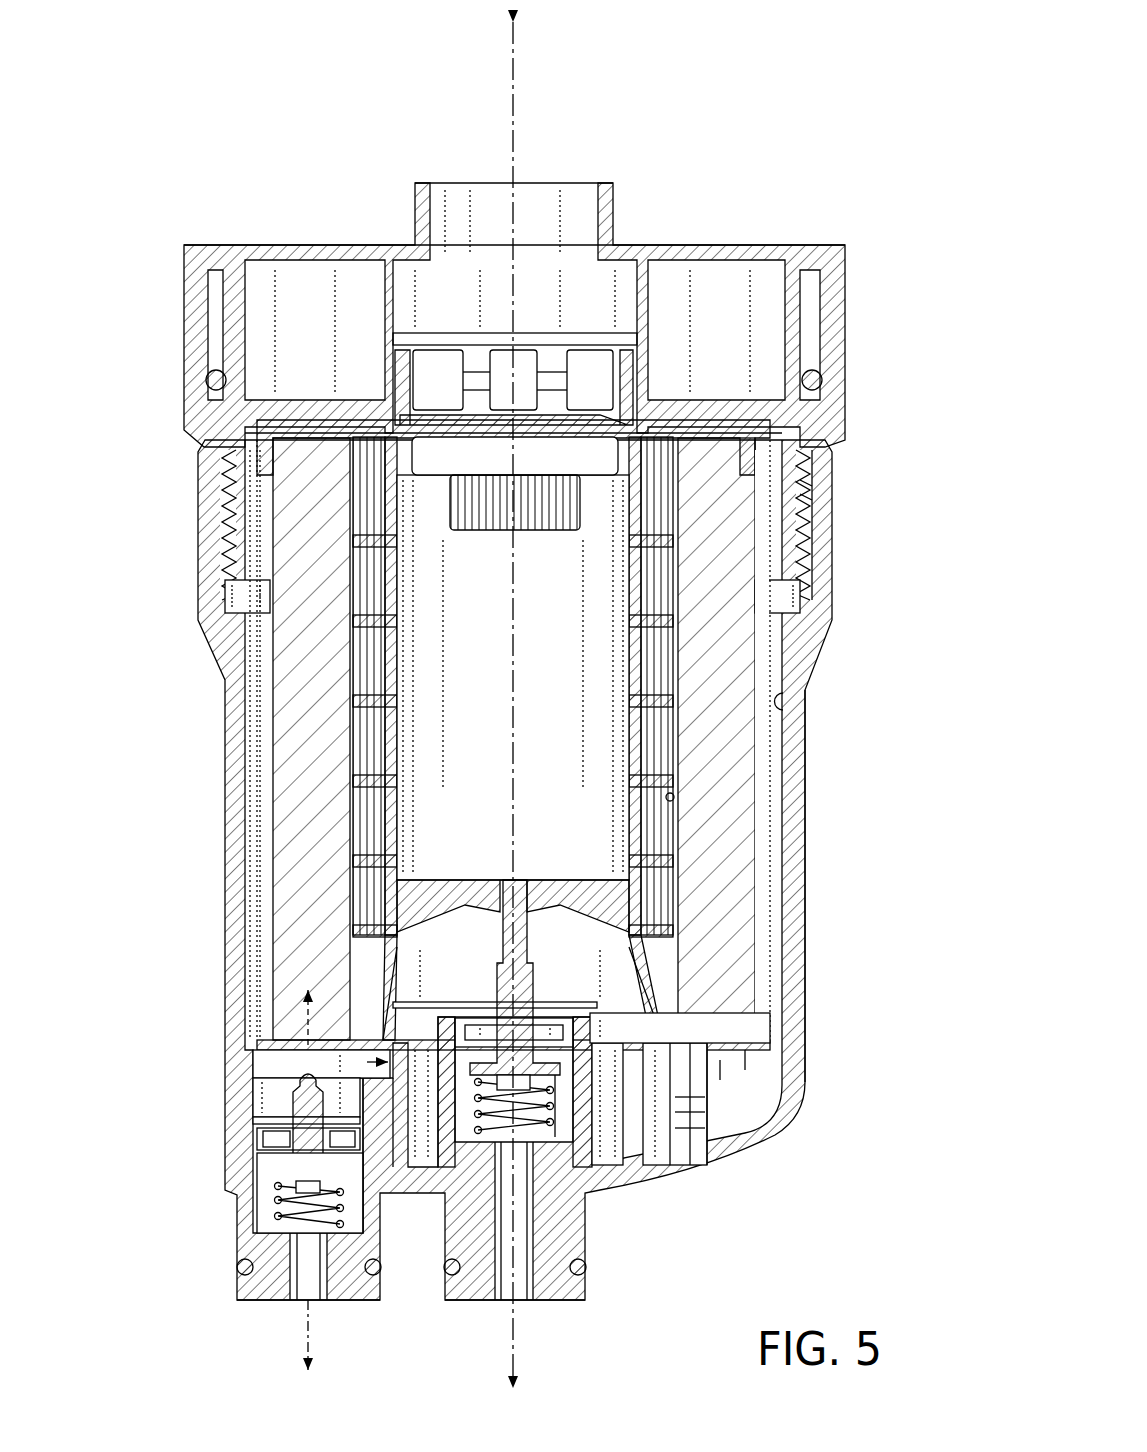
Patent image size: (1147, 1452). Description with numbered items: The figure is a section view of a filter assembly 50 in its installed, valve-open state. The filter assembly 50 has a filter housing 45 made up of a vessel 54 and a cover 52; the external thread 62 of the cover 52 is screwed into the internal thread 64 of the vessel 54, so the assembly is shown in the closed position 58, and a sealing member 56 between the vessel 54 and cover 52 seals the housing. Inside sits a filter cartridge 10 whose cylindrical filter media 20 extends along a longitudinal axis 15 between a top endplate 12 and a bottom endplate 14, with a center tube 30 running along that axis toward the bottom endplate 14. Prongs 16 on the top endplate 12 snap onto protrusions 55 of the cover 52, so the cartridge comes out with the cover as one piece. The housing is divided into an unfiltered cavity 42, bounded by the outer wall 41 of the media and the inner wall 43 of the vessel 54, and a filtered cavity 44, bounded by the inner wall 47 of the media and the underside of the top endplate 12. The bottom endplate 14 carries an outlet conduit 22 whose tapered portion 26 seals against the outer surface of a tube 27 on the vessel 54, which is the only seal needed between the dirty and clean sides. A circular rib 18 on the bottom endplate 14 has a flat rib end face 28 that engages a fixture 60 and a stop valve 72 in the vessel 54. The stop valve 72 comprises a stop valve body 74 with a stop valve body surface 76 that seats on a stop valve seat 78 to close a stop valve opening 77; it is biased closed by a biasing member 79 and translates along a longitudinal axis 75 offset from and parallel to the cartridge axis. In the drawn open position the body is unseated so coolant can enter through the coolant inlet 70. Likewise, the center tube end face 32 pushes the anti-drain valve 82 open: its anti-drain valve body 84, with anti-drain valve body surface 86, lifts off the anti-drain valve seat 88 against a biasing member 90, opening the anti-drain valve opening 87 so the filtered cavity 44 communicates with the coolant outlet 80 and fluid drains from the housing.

The filter cartridge 10 is at (770, 660).
The top endplate 12 is at (777, 427).
The bottom endplate 14 is at (759, 1057).
The longitudinal axis 15 is at (518, 130).
The prongs 16 is at (640, 366).
The rib 18 is at (735, 1068).
The filter media 20 is at (738, 835).
The outlet conduit 22 is at (360, 1062).
The tapered portion 26 is at (692, 1087).
The tube 27 is at (732, 1082).
The rib end face 28 is at (300, 1098).
The center tube 30 is at (547, 948).
The center tube end face 32 is at (530, 968).
The outer wall 41 is at (272, 777).
The unfiltered cavity 42 is at (264, 703).
The inner wall 43 is at (783, 710).
The filtered cavity 44 is at (608, 1013).
The filter housing 45 is at (874, 256).
The inner wall 47 is at (674, 797).
The filter assembly 50 is at (718, 147).
The cover 52 is at (795, 243).
The vessel 54 is at (806, 725).
The protrusions 55 is at (382, 378).
The sealing member 56 is at (824, 382).
The closed position 58 is at (818, 521).
The fixture 60 is at (702, 1097).
The external thread 62 is at (802, 482).
The internal thread 64 is at (806, 497).
The coolant inlet 70 is at (301, 1305).
The stop valve 72 is at (266, 1198).
The stop valve body 74 is at (295, 1110).
The longitudinal axis 75 is at (318, 1335).
The stop valve body surface 76 is at (378, 1162).
The stop valve opening 77 is at (290, 1143).
The stop valve seat 78 is at (272, 1170).
The biasing member 79 is at (277, 1215).
The coolant outlet 80 is at (525, 1305).
The anti-drain valve 82 is at (602, 1047).
The anti-drain valve body 84 is at (503, 966).
The anti-drain valve body surface 86 is at (441, 1075).
The anti-drain valve opening 87 is at (492, 1043).
The anti-drain valve seat 88 is at (567, 1095).
The biasing member 90 is at (560, 1100).